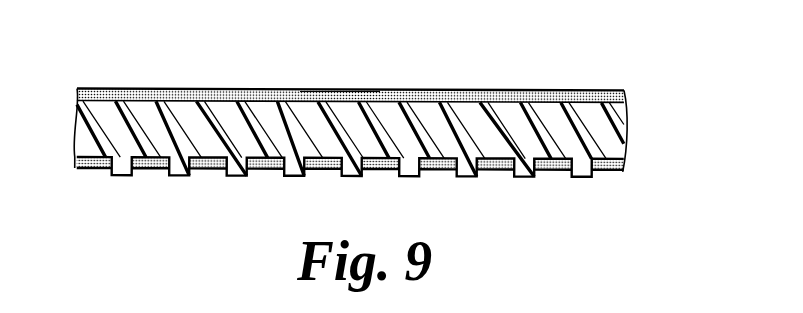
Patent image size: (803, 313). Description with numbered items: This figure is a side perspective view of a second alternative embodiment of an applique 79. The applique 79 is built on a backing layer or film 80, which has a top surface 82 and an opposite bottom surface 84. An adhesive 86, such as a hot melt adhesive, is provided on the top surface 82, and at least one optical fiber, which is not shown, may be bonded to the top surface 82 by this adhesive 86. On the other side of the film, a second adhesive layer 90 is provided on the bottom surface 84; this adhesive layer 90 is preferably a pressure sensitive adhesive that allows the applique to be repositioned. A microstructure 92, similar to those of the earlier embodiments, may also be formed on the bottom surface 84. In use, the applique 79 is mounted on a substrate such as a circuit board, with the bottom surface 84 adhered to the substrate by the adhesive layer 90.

The applique 79 is at (632, 59).
The backing layer or film 80 is at (625, 118).
The top surface 82 is at (535, 92).
The bottom surface 84 is at (620, 176).
The adhesive 86 is at (337, 90).
The second adhesive layer 90 is at (268, 171).
The microstructure 92 is at (518, 173).